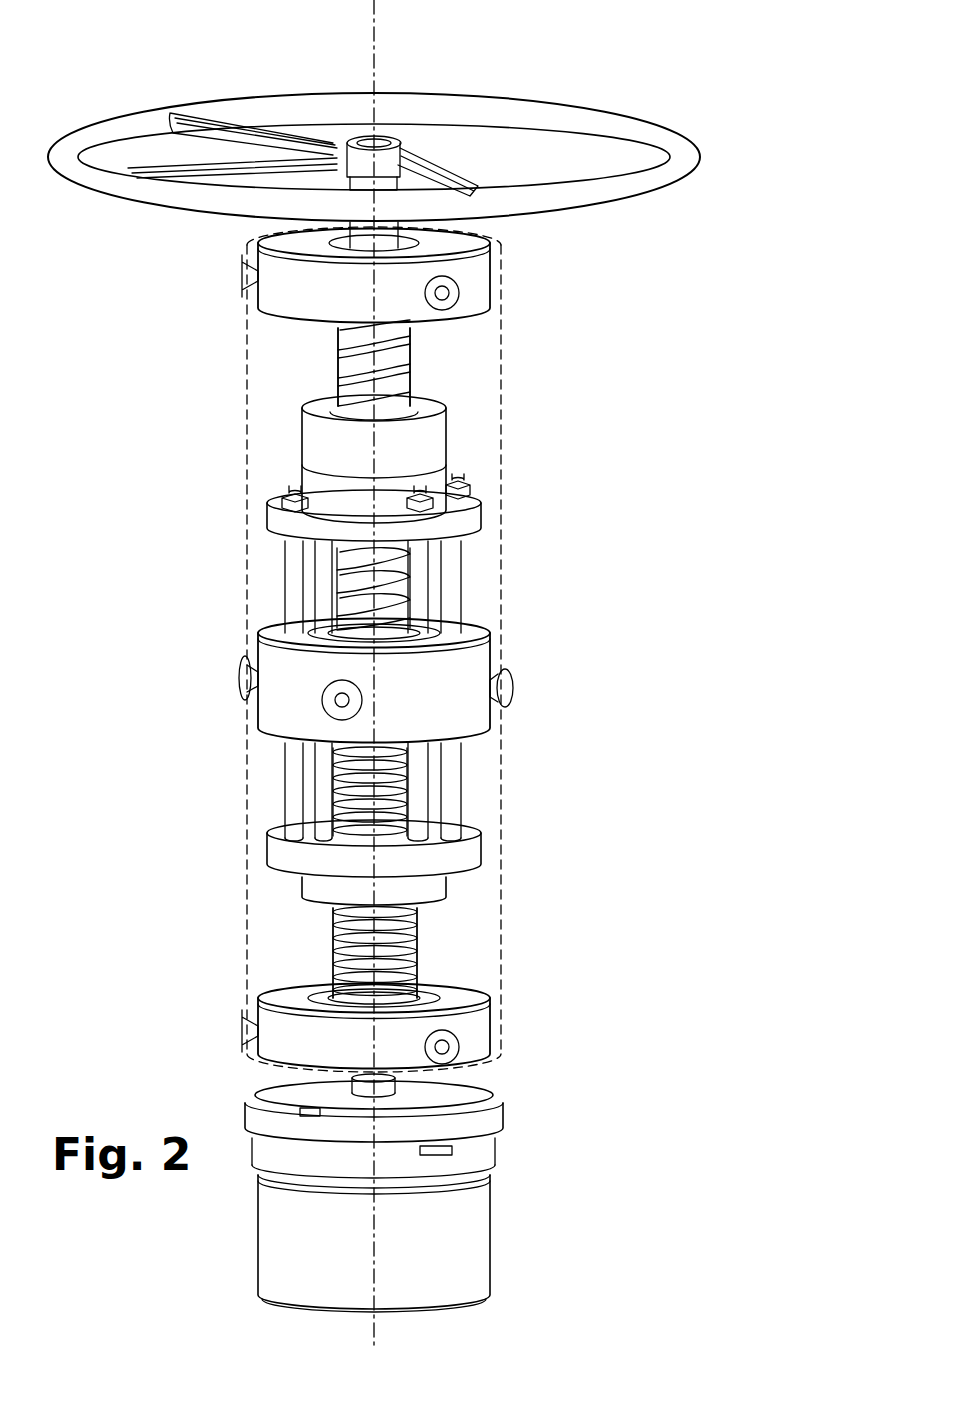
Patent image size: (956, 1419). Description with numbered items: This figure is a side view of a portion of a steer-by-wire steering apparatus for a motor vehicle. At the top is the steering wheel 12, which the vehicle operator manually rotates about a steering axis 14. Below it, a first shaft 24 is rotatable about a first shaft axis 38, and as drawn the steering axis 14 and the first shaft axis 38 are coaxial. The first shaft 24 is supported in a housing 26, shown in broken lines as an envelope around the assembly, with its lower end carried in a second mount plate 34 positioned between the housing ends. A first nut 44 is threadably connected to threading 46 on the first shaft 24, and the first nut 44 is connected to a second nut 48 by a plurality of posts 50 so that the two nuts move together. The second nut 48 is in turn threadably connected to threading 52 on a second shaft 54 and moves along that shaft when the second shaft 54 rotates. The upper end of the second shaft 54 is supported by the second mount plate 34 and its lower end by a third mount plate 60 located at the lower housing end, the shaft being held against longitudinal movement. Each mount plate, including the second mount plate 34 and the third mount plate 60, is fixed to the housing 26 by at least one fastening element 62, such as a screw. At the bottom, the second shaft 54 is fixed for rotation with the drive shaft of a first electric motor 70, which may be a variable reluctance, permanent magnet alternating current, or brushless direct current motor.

The steering wheel 12 is at (578, 123).
The steering axis 14 is at (454, 675).
The first shaft axis 38 is at (374, 17).
The first shaft 24 is at (335, 363).
The housing 26 is at (500, 383).
The second mount plate 34 is at (470, 667).
The first nut 44 is at (478, 522).
The threading 46 is at (322, 390).
The second nut 48 is at (455, 855).
The posts 50 is at (455, 582).
The threading 52 is at (318, 943).
The second shaft 54 is at (413, 922).
The third mount plate 60 is at (478, 1043).
The fastening element 62 is at (242, 280).
The first electric motor 70 is at (455, 1223).